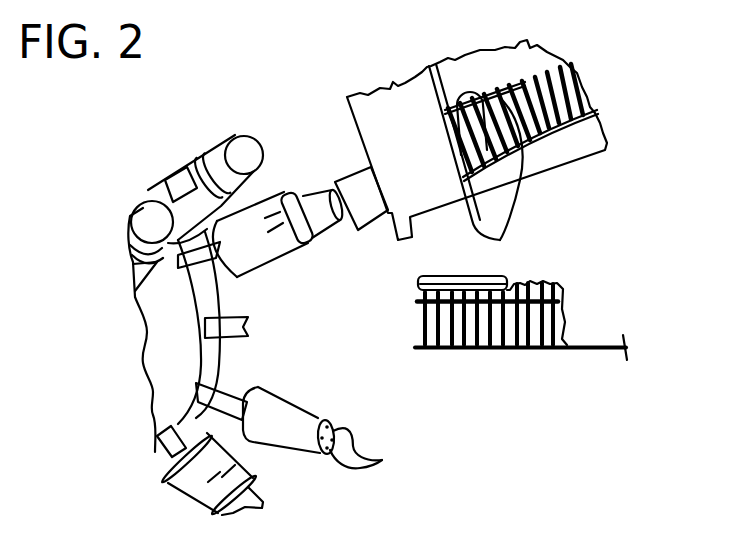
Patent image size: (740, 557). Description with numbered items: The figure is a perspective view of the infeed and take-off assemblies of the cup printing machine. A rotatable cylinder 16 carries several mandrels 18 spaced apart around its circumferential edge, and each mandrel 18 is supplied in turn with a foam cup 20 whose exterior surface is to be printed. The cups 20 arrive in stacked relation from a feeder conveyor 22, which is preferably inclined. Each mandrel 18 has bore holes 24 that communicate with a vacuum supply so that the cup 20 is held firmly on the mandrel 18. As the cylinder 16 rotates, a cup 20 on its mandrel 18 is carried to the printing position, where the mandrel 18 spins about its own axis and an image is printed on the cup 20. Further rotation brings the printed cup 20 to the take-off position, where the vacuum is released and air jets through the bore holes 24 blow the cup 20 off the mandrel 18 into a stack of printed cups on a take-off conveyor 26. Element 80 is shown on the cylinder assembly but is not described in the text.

The rotatable cylinder 16 is at (203, 294).
The mandrel 18 is at (232, 334).
The foam cup 20 is at (215, 160).
The feeder conveyor 22 is at (590, 171).
The bore holes 24 is at (373, 453).
The take-off conveyor 26 is at (460, 350).
The mounting plate 80 is at (178, 182).